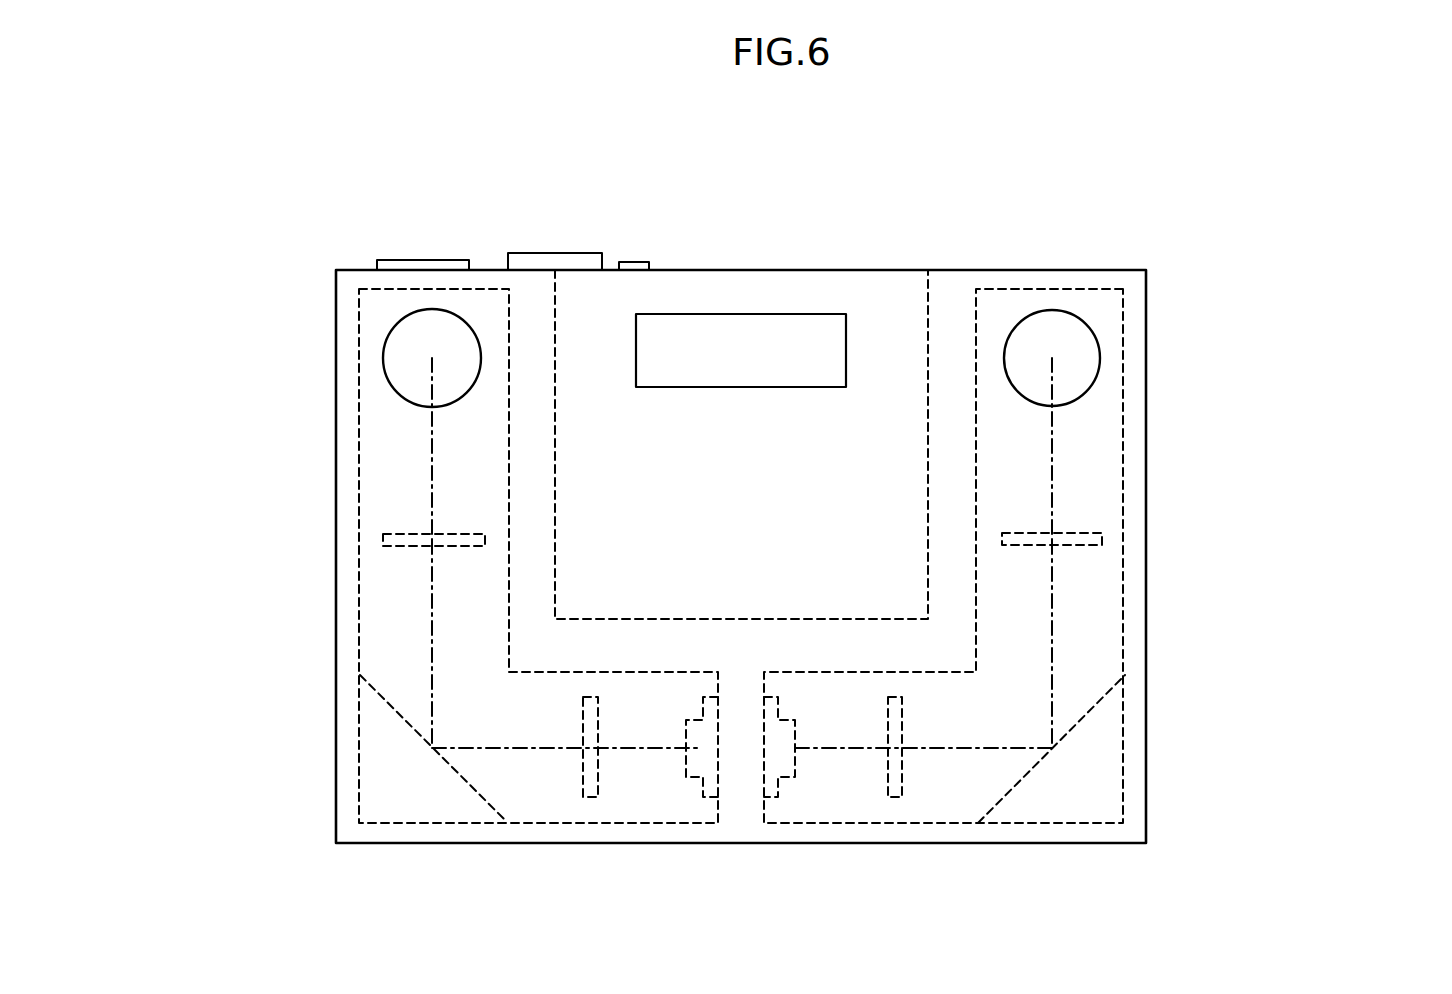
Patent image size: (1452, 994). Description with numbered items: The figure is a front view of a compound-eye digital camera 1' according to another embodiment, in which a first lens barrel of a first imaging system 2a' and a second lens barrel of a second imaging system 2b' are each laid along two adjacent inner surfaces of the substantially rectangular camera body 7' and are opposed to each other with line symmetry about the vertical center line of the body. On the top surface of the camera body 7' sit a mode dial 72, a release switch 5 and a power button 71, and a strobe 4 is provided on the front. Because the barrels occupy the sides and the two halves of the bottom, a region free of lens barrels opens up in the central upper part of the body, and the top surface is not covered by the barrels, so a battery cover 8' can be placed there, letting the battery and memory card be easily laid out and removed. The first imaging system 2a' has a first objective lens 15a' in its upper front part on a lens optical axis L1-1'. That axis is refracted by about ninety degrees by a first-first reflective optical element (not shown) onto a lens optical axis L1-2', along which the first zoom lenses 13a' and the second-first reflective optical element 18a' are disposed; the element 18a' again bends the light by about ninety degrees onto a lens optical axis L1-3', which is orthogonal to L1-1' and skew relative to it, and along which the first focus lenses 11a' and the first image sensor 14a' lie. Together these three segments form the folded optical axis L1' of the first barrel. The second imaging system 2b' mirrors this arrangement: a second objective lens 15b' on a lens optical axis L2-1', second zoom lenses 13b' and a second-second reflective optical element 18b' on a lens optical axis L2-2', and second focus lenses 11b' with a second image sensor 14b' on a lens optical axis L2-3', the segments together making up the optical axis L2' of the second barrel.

The compound-eye digital camera 1' is at (741, 503).
The mode dial 72 is at (420, 260).
The release switch 5 is at (553, 253).
The power button 71 is at (636, 262).
The strobe 4 is at (760, 316).
The battery cover 8' is at (741, 409).
The camera body 7' is at (741, 521).
The first imaging system 2a' is at (487, 556).
The second imaging system 2b' is at (991, 556).
The first objective lens 15a' is at (360, 358).
The second objective lens 15b' is at (1116, 358).
The first zoom lenses 13a' is at (440, 509).
The second zoom lenses 13b' is at (1115, 537).
The first focus lenses 11a' is at (593, 798).
The second focus lenses 11b' is at (895, 798).
The first image sensor 14a' is at (697, 798).
The second image sensor 14b' is at (785, 798).
The second-first reflective optical element 18a' is at (433, 787).
The second-second reflective optical element 18b' is at (1051, 787).
The lens optical axis of the first lens barrel L1' is at (393, 553).
The lens optical axis L1-1' is at (305, 467).
The lens optical axis L1-2' is at (305, 644).
The lens optical axis L1-3' is at (438, 700).
The lens optical axis of the second lens barrel L2' is at (1120, 553).
The lens optical axis L2-1' is at (1209, 467).
The lens optical axis L2-2' is at (1209, 644).
The lens optical axis L2-3' is at (1078, 706).